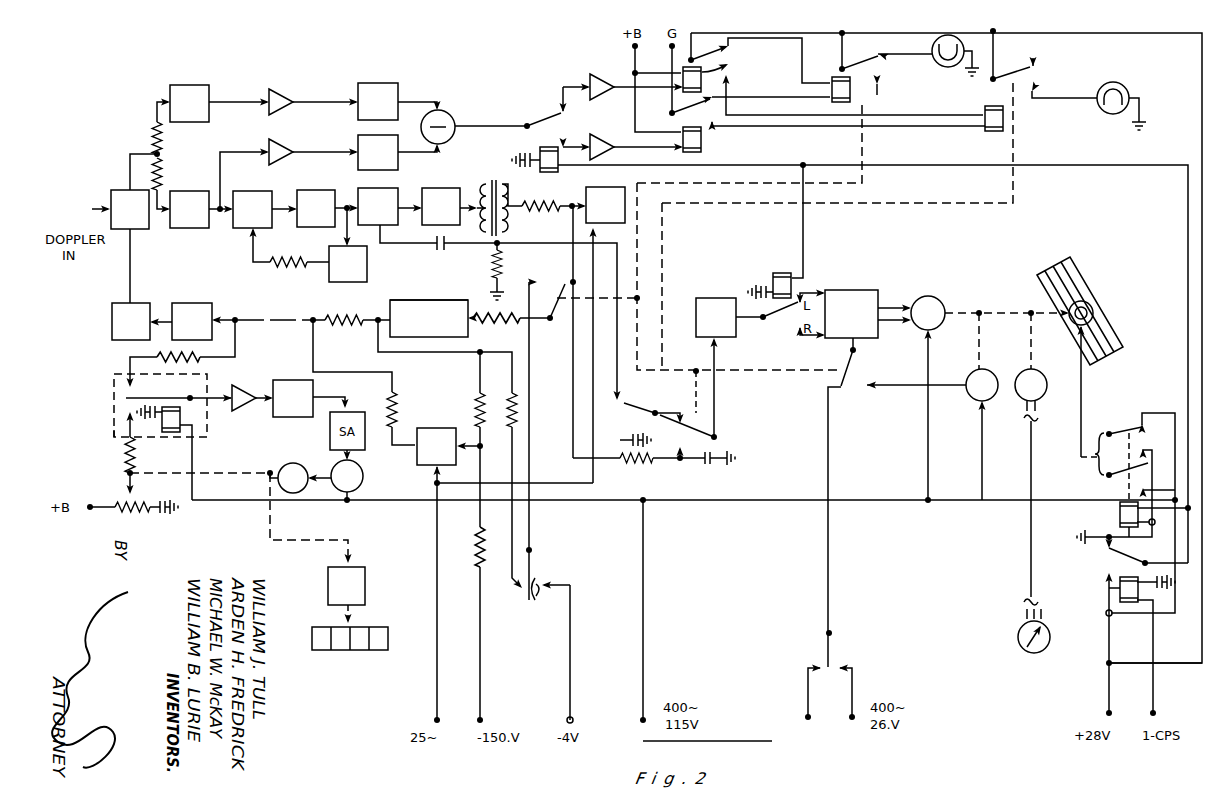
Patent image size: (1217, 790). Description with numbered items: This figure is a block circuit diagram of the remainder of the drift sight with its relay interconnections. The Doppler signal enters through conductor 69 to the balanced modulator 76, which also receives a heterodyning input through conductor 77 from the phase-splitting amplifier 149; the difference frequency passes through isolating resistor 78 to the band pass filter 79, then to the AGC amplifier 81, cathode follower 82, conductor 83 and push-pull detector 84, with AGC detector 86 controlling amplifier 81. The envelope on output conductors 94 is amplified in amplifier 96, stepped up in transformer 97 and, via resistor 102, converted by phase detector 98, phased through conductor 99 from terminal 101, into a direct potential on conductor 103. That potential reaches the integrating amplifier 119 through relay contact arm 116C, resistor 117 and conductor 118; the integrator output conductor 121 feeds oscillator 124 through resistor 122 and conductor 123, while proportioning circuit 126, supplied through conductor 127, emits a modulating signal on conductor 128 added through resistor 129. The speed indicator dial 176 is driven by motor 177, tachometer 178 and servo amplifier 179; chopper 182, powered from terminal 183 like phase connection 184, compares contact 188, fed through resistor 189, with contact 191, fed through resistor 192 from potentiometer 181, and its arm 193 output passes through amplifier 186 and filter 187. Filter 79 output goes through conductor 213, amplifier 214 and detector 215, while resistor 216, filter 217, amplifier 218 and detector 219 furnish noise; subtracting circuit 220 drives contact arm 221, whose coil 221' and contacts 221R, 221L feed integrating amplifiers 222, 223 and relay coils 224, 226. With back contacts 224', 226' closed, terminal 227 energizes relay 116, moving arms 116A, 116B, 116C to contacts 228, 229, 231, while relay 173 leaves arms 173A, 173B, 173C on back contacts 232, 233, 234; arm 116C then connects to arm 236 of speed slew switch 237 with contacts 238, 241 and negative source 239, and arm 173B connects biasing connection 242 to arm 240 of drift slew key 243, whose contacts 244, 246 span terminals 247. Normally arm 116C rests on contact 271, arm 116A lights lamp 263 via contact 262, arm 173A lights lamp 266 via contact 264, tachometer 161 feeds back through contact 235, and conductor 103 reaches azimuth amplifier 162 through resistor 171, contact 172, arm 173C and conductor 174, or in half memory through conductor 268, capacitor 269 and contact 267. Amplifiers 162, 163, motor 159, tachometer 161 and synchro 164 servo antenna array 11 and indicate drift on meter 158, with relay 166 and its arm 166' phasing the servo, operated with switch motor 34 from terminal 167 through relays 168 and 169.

The conductor 69 is at (94, 209).
The balanced modulator 76 is at (112, 191).
The isolating resistor 216 is at (142, 143).
The isolating resistor 78 is at (164, 172).
The filter 217 is at (206, 86).
The band pass filter 79 is at (185, 231).
The conductor 213 is at (215, 157).
The amplifier 218 is at (283, 90).
The amplifier 214 is at (283, 144).
The detector 219 is at (393, 82).
The detector 215 is at (358, 137).
The subtracting circuit 220 is at (455, 112).
The contact arm 221 is at (508, 111).
The fixed contact 221R is at (568, 113).
The fixed contact 221L is at (566, 139).
The relay coil 221' is at (519, 152).
The integrating amplifier 222 is at (598, 80).
The integrating amplifier 223 is at (612, 152).
The delayed automatic gain control amplifier 81 is at (238, 231).
The cathode follower 82 is at (300, 190).
The conductor 83 is at (340, 190).
The push-pull detector 84 is at (391, 190).
The output conductors 94 is at (412, 196).
The amplifier 96 is at (434, 188).
The transformer 97 is at (499, 200).
The resistor 102 is at (559, 214).
The conductor 103 is at (576, 198).
The phase detector 98 is at (618, 188).
The automatic gain control detector 86 is at (326, 278).
The conductor 268 is at (380, 252).
The capacitor 269 is at (438, 246).
The contact 231 is at (542, 268).
The contact 271 is at (565, 260).
The relay contact arm 116C is at (555, 318).
The relay coil 224 is at (724, 75).
The back contact 224' is at (760, 60).
The back contact 226' is at (751, 105).
The relay coil 226 is at (718, 145).
The relay 116 is at (865, 101).
The contact arm 116A is at (880, 47).
The contact 262 is at (877, 56).
The contact 228 is at (877, 86).
The ground speed lamp 263 is at (938, 70).
The contact arm 173A is at (1016, 66).
The back contact 232 is at (1034, 66).
The contact 264 is at (1034, 88).
The drift lamp 266 is at (1135, 84).
The relay 173 is at (1003, 116).
The conductor 77 is at (130, 282).
The phase-splitting amplifier 149 is at (110, 322).
The oscillator 124 is at (206, 302).
The conductor 123 is at (224, 318).
The resistor 122 is at (354, 312).
The resistor 189 is at (144, 350).
The contact 188 is at (109, 388).
The contact arm 193 is at (146, 398).
The amplifier 186 is at (252, 386).
The filter 187 is at (306, 380).
The servo amplifier 179 is at (352, 404).
The contact 191 is at (109, 412).
The vibrator or chopper 182 is at (109, 437).
The resistor 192 is at (115, 458).
The potentiometer 181 is at (116, 500).
The tachometer 178 is at (280, 464).
The motor 177 is at (363, 470).
The phase connection 184 is at (360, 498).
The resistor 129 is at (394, 396).
The conductor 128 is at (400, 438).
The proportioning circuit 126 is at (438, 424).
The conductor 121 is at (385, 310).
The integrating amplifier 119 is at (454, 302).
The conductor 118 is at (476, 328).
The resistor 117 is at (515, 324).
The conductor 99 is at (584, 470).
The conductor 127 is at (436, 538).
The terminal 101 is at (434, 722).
The dial or counter 176 is at (388, 639).
The contact 241 is at (521, 588).
The ground speed slew switch 237 is at (593, 553).
The arm 236 is at (527, 603).
The contact 238 is at (574, 648).
The negative fixed direct potential source 239 is at (568, 718).
The terminal 183 is at (640, 718).
The isolating resistor 171 is at (652, 472).
The relay contact 172 is at (668, 474).
The contact arm 116B is at (628, 402).
The contact 229 is at (624, 428).
The back contact 234 is at (685, 423).
The relay contact arm 173C is at (713, 440).
The conductor 174 is at (716, 385).
The contact 267 is at (637, 390).
The azimuth amplifier 162 is at (730, 298).
The relay contact arm 166' is at (767, 320).
The relay 166 is at (775, 232).
The azimuth amplifier 163 is at (870, 288).
The motor 159 is at (932, 288).
The biasing connection 242 is at (846, 354).
The contact arm 173B is at (858, 360).
The back contact 233 is at (828, 388).
The contact 235 is at (866, 398).
The tachometer 161 is at (970, 368).
The synchro transmitter 164 is at (1022, 368).
The switch motor 34 is at (1106, 311).
The antenna array 11 is at (1038, 274).
The remote indicating meter 158 is at (1018, 637).
The relay 169 is at (1118, 504).
The relay 168 is at (1110, 594).
The supply terminal 227 is at (1106, 714).
The terminal 167 is at (1158, 716).
The contact arm 240 is at (826, 644).
The drift angle slewing switch 243 is at (895, 629).
The fixed contact 244 is at (814, 664).
The fixed contact 246 is at (845, 657).
The terminals 247 is at (850, 718).